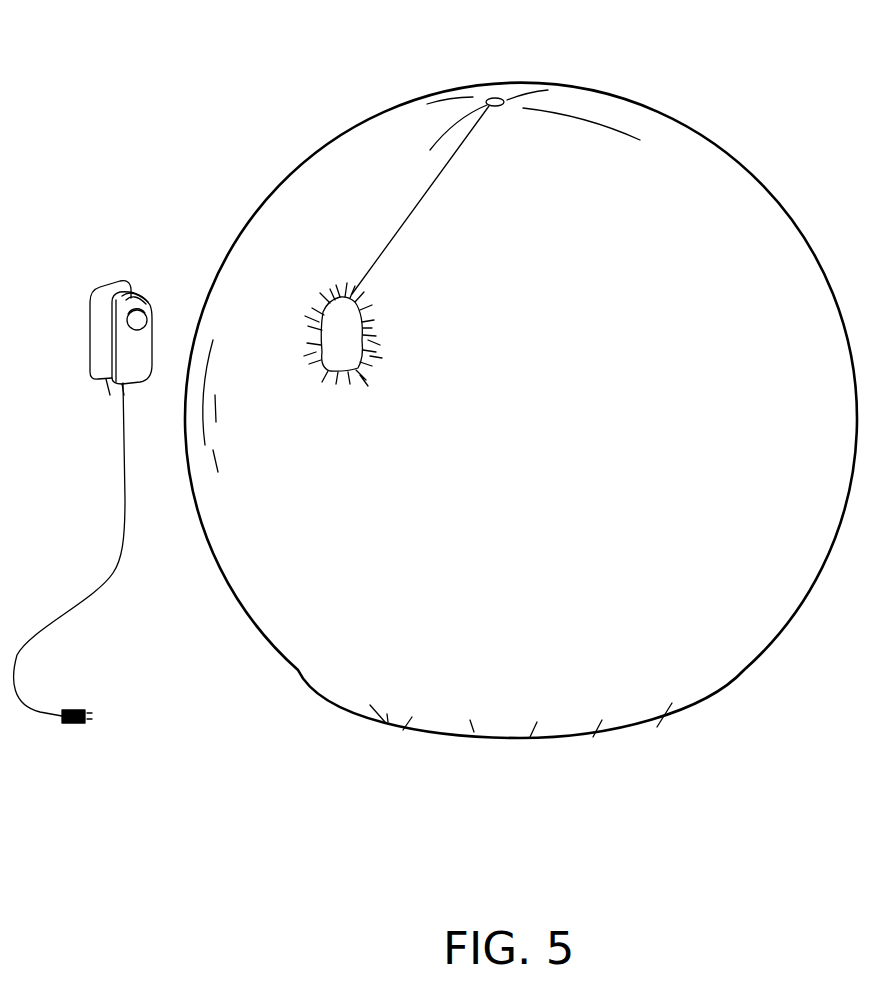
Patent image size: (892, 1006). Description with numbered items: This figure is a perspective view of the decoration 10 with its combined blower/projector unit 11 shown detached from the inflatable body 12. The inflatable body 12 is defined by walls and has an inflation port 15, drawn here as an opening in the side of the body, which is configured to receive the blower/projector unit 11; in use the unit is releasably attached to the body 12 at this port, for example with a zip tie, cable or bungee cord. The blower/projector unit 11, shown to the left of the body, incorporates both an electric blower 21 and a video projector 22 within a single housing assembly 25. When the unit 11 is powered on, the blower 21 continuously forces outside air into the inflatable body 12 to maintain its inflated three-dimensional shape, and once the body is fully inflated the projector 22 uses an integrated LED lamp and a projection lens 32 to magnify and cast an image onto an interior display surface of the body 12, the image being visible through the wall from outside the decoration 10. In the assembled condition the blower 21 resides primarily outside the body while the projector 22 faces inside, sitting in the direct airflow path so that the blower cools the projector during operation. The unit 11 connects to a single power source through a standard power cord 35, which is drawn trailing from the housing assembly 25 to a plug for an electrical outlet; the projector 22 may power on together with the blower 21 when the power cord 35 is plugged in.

The decoration 10 is at (238, 131).
The blower/projector unit 11 is at (95, 335).
The inflatable body 12 is at (716, 175).
The inflation port 15 is at (328, 348).
The electric blower 21 is at (95, 352).
The video projector 22 is at (138, 302).
The housing assembly 25 is at (108, 385).
The projection lens 32 is at (147, 318).
The power cord 35 is at (113, 573).